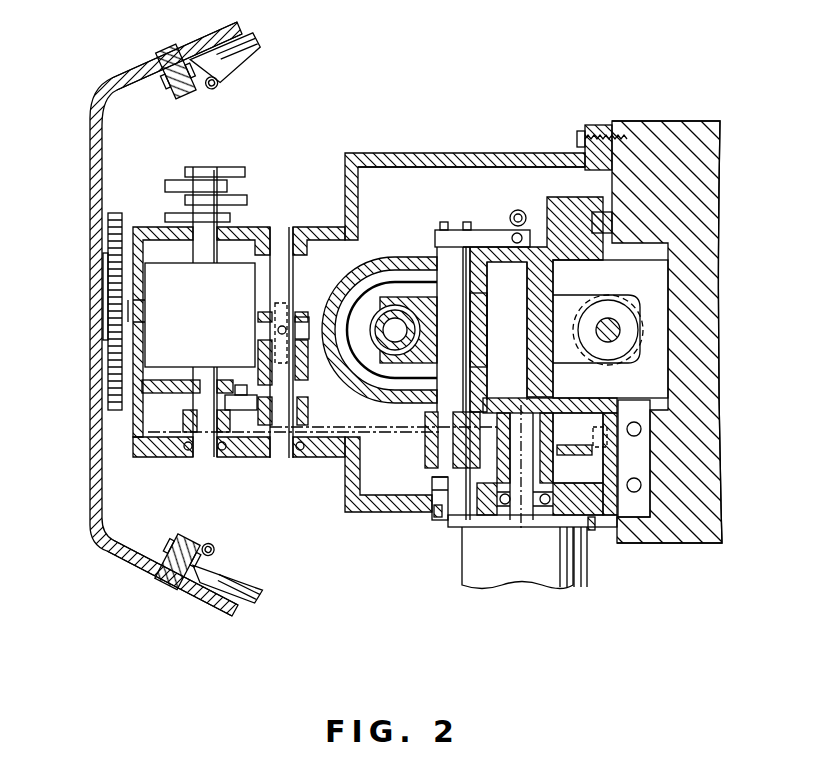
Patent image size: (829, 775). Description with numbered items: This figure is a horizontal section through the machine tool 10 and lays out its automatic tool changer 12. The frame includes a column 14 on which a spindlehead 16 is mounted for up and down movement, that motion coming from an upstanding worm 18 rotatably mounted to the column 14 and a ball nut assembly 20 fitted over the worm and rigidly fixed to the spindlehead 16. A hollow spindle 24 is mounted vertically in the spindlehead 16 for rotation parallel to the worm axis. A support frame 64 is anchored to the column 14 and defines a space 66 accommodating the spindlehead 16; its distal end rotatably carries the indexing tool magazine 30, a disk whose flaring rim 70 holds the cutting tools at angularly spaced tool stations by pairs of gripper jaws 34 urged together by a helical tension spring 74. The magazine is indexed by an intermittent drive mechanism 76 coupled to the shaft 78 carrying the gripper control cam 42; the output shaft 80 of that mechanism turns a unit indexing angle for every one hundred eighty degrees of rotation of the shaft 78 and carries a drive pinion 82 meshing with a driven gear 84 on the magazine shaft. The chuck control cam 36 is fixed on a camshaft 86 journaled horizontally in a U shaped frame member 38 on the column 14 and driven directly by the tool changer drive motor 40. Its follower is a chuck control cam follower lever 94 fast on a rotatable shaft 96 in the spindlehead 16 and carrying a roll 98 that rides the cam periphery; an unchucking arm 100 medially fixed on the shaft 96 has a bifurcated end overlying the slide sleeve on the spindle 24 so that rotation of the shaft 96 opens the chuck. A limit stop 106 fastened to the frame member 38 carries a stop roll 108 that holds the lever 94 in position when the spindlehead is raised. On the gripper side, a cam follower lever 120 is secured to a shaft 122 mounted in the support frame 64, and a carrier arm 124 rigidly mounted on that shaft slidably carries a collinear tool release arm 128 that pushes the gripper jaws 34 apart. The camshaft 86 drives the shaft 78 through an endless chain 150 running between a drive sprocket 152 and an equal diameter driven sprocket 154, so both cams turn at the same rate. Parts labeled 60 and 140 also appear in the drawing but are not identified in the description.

The machine tool 10 is at (731, 120).
The automatic tool changer 12 is at (126, 66).
The column 14 is at (657, 132).
The spindlehead 16 is at (553, 202).
The worm 18 is at (615, 320).
The ball nut assembly 20 is at (605, 302).
The spindle 24 is at (373, 328).
The tool magazine 30 is at (86, 112).
The gripper jaws 34 is at (254, 32).
The chuck control cam 36 is at (568, 458).
The frame member 38 is at (607, 517).
The tool changer drive motor 40 is at (588, 570).
The gripper control cam 42 is at (252, 393).
The lever arm 60 is at (372, 310).
The support frame 64 is at (448, 153).
The space 66 is at (388, 177).
The flaring rim 70 is at (143, 567).
The helical tension spring 74 is at (208, 547).
The intermittent drive mechanism 76 is at (196, 325).
The shaft 78 is at (207, 448).
The output shaft 80 is at (143, 313).
The drive pinion 82 is at (107, 330).
The driven gear 84 is at (117, 213).
The camshaft 86 is at (525, 498).
The chuck control cam follower lever 94 is at (423, 445).
The rotatable shaft 96 is at (447, 255).
The roll 98 is at (467, 420).
The unchucking arm 100 is at (432, 345).
The limit stop 106 is at (432, 520).
The roll 108 is at (430, 477).
The cam follower lever 120 is at (247, 397).
The shaft 122 is at (283, 236).
The carrier arm 124 is at (310, 367).
The tool release arm 128 is at (262, 327).
The pin 140 is at (278, 331).
The endless chain 150 is at (323, 427).
The drive sprocket 152 is at (560, 425).
The driven sprocket 154 is at (178, 425).